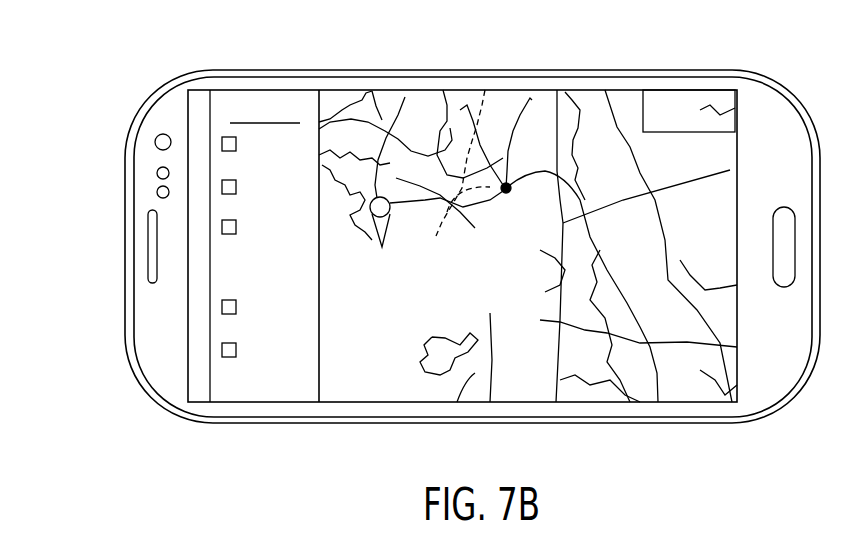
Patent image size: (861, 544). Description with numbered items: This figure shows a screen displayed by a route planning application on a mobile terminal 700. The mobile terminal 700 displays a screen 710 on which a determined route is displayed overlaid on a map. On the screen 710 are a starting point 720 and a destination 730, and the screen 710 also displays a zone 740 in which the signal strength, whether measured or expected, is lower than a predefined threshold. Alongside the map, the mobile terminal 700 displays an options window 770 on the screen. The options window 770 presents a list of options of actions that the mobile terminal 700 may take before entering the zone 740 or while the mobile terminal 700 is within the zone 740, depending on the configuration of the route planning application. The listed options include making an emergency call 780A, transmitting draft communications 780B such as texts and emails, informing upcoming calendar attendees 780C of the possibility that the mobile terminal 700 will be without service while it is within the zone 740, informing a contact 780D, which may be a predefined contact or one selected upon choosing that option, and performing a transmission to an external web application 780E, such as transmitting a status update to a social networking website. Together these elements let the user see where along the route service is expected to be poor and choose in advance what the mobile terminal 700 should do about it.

The mobile terminal 700 is at (710, 70).
The screen 710 is at (618, 100).
The starting point 720 is at (532, 100).
The destination 730 is at (405, 97).
The zone 740 is at (485, 90).
The options window 770 is at (265, 103).
The emergency call option 780A is at (222, 145).
The transmitting draft communications option 780B is at (222, 187).
The inform upcoming calendar attendees option 780C is at (222, 227).
The informing a contact option 780D is at (222, 307).
The transmit to external web app option 780E is at (222, 350).